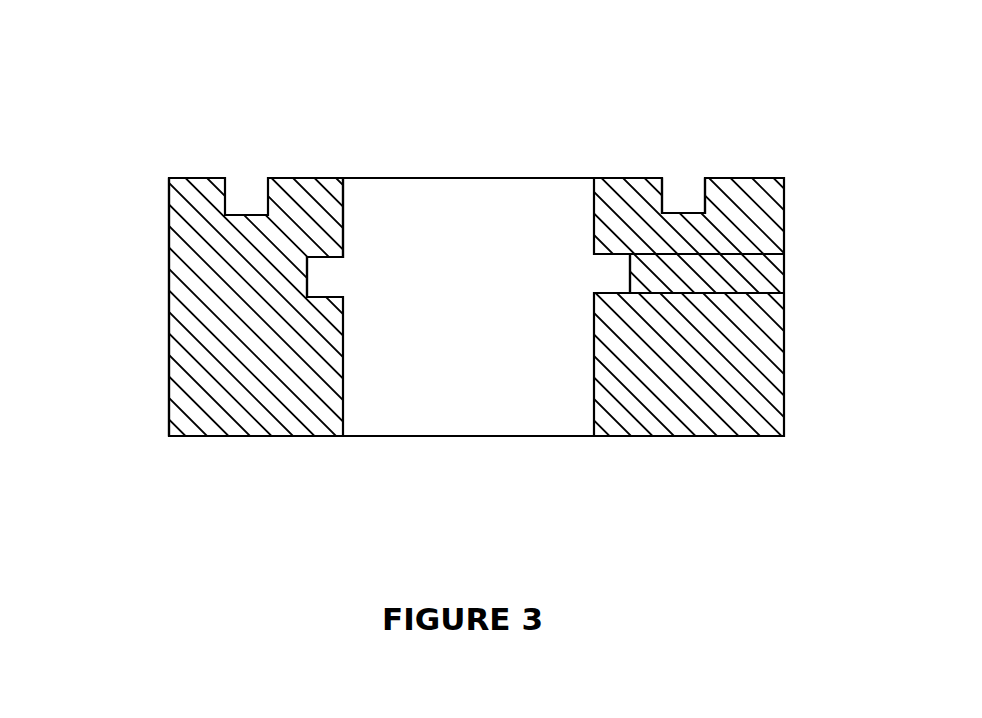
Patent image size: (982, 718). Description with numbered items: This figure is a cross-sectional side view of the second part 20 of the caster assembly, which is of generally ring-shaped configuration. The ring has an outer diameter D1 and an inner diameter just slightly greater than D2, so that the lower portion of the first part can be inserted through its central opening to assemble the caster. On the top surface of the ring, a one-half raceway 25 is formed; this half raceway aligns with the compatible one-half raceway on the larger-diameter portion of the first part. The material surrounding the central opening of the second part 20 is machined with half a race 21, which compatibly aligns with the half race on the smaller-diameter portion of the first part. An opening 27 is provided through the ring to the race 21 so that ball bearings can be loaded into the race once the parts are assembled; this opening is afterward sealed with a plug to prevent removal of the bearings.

The second part 20 is at (158, 168).
The race 21 is at (319, 250).
The one-half raceway 25 is at (687, 185).
The opening 27 is at (765, 268).
The outer diameter D1 is at (169, 270).
The inner diameter D2 is at (357, 438).